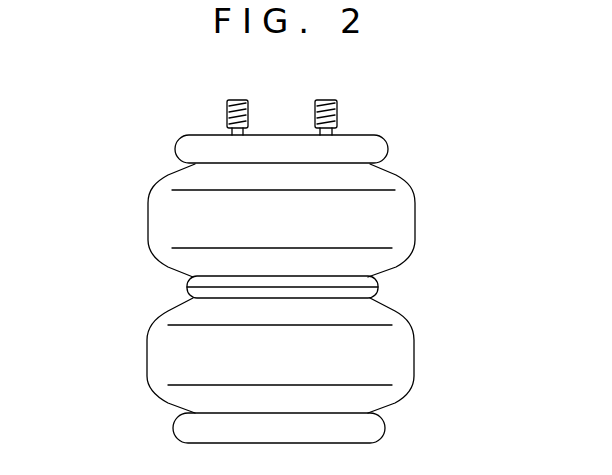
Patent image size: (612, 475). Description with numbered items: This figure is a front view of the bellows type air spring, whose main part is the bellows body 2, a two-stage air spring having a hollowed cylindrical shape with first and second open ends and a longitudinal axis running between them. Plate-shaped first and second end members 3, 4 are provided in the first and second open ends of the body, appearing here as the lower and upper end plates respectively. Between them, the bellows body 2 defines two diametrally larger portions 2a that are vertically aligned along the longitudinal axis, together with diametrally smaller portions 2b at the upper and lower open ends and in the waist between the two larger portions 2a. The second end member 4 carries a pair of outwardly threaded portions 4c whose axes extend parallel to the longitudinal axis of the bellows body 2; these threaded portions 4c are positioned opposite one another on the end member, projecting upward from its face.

The bellows body 2 is at (121, 219).
The diametrally larger portions 2a is at (154, 314).
The diametrally smaller portions 2b is at (380, 289).
The first end member 3 is at (373, 428).
The second end member 4 is at (377, 148).
The outwardly threaded portions 4c is at (233, 100).